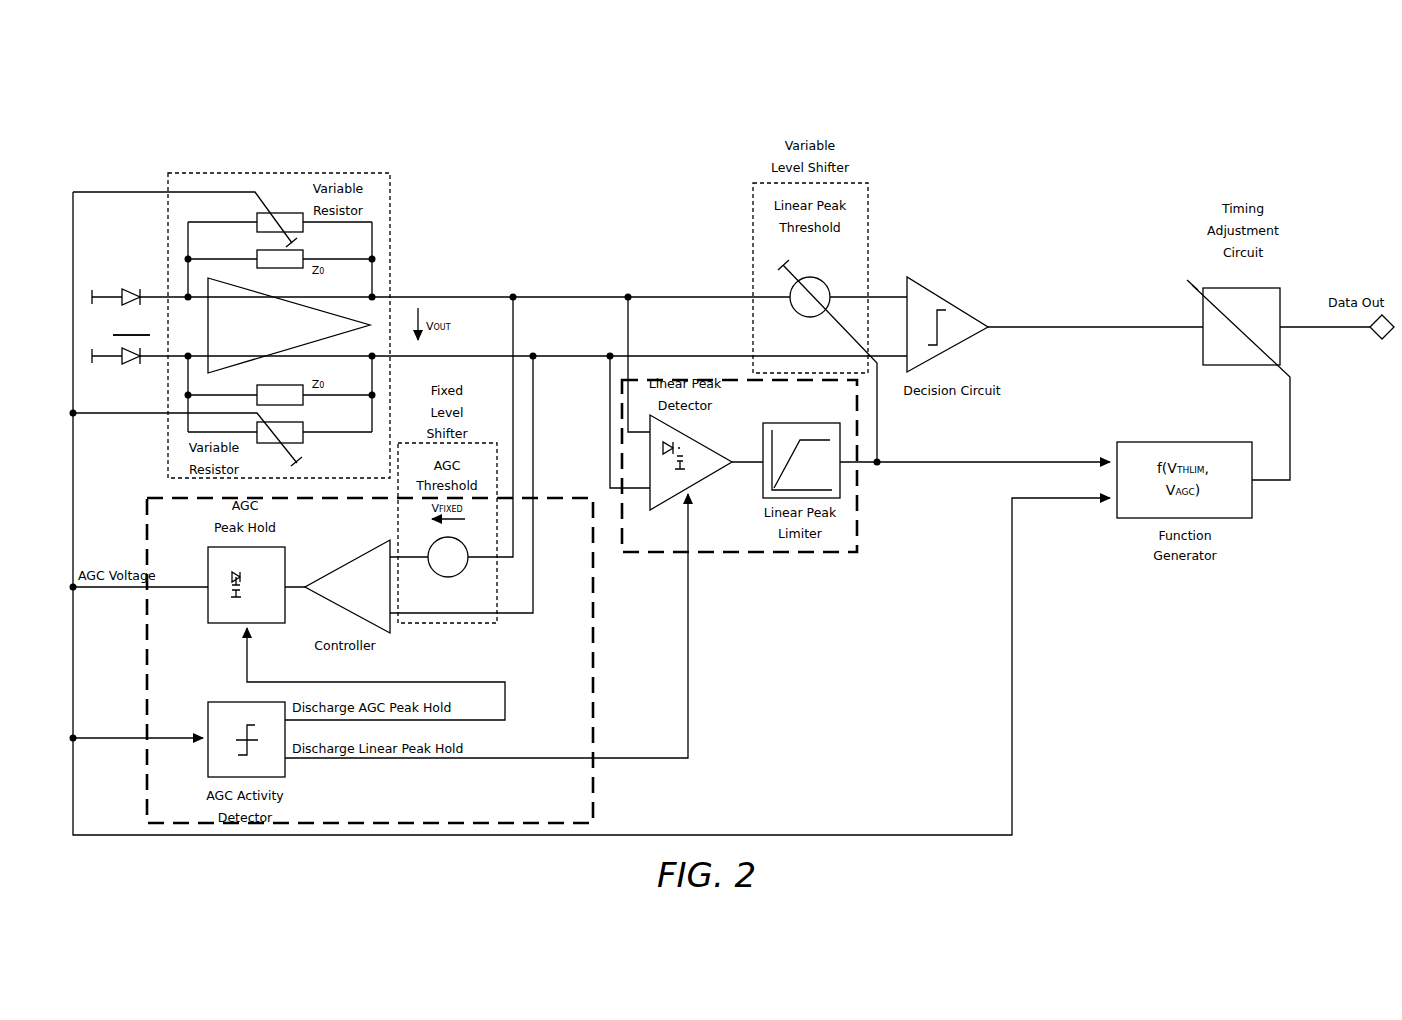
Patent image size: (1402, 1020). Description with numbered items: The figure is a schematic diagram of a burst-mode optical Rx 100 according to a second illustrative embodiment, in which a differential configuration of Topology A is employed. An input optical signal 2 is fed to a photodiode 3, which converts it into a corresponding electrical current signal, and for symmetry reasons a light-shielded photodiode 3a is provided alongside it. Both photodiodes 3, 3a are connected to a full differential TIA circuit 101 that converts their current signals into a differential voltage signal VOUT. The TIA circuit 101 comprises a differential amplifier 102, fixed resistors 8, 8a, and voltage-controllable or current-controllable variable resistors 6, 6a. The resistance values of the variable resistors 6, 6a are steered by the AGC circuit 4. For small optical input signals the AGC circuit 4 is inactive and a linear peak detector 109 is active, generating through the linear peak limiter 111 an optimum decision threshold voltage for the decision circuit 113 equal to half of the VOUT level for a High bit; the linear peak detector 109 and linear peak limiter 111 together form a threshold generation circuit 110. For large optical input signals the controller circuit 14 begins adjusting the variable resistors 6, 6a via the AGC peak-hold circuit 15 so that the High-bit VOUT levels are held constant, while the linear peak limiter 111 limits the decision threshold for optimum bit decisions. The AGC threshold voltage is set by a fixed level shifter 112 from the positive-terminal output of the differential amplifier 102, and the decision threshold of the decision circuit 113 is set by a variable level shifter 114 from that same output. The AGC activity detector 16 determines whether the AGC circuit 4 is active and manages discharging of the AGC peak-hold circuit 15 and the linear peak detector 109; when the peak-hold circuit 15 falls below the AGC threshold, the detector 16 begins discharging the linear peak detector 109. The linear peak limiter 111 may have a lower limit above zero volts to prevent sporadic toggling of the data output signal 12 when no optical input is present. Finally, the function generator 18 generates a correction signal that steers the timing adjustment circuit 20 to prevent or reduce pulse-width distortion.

The burst-mode optical Rx 100 is at (962, 104).
The input optical signal 2 is at (128, 278).
The photodiode 3 is at (129, 290).
The light-shielded photodiode 3a is at (128, 364).
The full differential TIA circuit 101 is at (370, 172).
The variable resistor 6 is at (260, 218).
The variable resistor 6a is at (303, 422).
The fixed resistor 8 is at (298, 250).
The fixed resistor 8a is at (273, 395).
The differential amplifier 102 is at (317, 322).
The AGC circuit 4 is at (542, 500).
The fixed level shifter 112 is at (470, 622).
The controller circuit 14 is at (328, 573).
The AGC peak-hold circuit 15 is at (222, 567).
The AGC activity detector 16 is at (217, 702).
The threshold generation circuit 110 is at (648, 380).
The linear peak detector 109 is at (688, 433).
The linear peak limiter 111 is at (795, 425).
The variable level shifter 114 is at (868, 217).
The decision circuit 113 is at (957, 305).
The timing adjustment circuit 20 is at (1247, 293).
The data output signal 12 is at (1377, 338).
The function generator 18 is at (1162, 442).